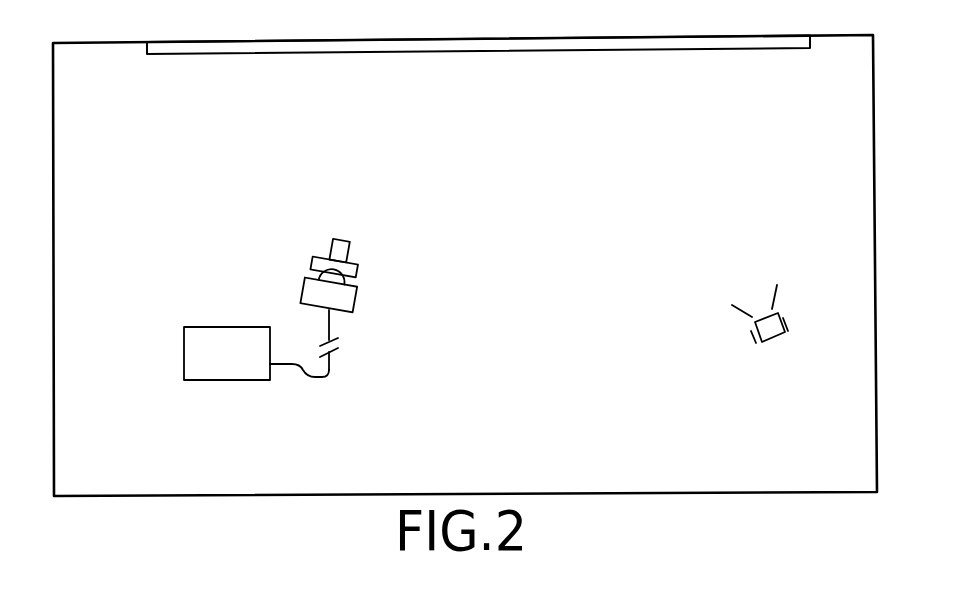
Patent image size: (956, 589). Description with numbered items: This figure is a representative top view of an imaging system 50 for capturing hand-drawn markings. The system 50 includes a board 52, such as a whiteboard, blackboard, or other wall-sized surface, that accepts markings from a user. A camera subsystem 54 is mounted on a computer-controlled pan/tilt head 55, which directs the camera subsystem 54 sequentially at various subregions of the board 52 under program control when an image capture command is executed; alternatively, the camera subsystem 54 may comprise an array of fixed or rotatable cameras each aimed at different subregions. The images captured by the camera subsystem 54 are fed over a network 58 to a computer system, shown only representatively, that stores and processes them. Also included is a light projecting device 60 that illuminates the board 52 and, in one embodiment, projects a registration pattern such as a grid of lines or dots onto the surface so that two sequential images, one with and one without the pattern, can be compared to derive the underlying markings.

The system 50 is at (112, 35).
The board 52 is at (510, 50).
The camera subsystem 54 is at (358, 267).
The pan/tilt head 55 is at (355, 298).
The network 58 is at (331, 364).
The light projecting device 60 is at (762, 342).